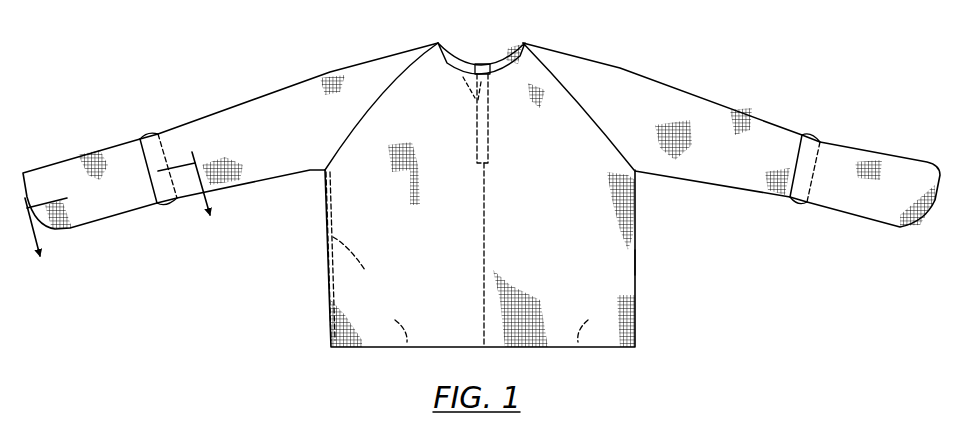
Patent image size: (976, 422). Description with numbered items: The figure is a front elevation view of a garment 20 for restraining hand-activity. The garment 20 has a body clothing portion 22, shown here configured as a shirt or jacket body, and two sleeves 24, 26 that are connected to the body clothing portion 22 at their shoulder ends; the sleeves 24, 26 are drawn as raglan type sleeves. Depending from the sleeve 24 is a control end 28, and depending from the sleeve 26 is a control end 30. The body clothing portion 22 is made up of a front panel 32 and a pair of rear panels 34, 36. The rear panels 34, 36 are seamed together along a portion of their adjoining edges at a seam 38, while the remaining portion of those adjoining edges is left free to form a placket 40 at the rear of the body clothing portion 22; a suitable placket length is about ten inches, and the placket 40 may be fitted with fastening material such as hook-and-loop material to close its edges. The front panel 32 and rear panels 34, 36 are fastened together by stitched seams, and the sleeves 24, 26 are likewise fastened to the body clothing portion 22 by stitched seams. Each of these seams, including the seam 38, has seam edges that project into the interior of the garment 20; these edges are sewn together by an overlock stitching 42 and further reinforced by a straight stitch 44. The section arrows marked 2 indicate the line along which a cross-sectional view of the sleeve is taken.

The garment 20 is at (390, 40).
The body clothing portion 22 is at (617, 288).
The sleeve 24 is at (215, 117).
The sleeve 26 is at (652, 97).
The control end 28 is at (117, 155).
The control end 30 is at (842, 150).
The front panel 32 is at (609, 250).
The rear panel 34 is at (407, 347).
The rear panel 36 is at (578, 347).
The seam 38 is at (487, 218).
The placket 40 is at (485, 92).
The overlock stitching 42 is at (338, 277).
The straight stitch 44 is at (327, 182).
The section line 2 is at (122, 218).